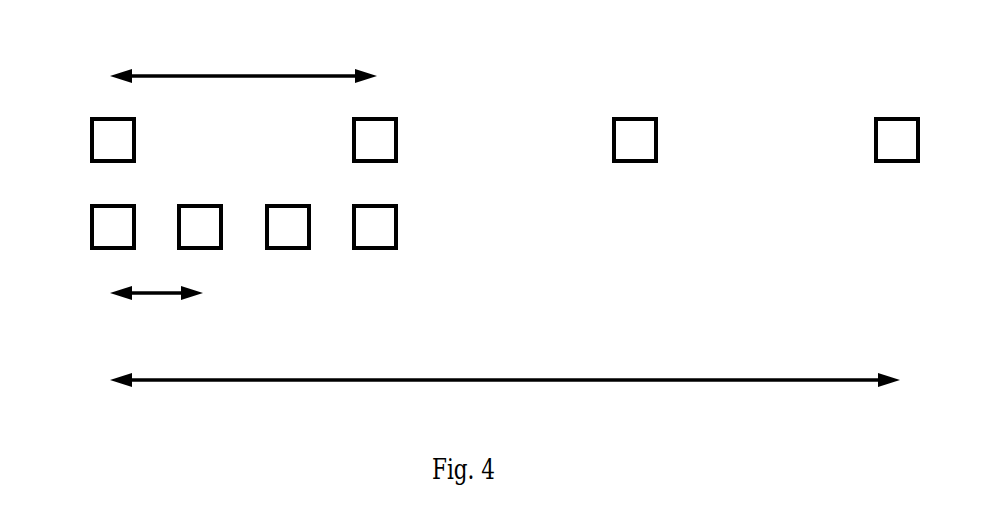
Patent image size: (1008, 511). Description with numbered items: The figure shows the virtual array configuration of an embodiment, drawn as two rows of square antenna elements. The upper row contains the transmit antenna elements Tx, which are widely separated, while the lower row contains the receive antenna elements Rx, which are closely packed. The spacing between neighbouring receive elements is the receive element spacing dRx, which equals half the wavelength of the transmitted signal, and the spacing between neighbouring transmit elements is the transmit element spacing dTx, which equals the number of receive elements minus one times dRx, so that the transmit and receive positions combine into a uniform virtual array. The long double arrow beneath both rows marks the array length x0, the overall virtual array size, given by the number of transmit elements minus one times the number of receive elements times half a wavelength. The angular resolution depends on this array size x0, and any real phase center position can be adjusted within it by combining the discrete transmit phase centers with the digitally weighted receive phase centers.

The transmit antenna elements Tx is at (461, 140).
The receive antenna elements Rx is at (201, 227).
The transmit element spacing dTx is at (243, 54).
The receive element spacing dRx is at (202, 336).
The array length x0 is at (578, 418).